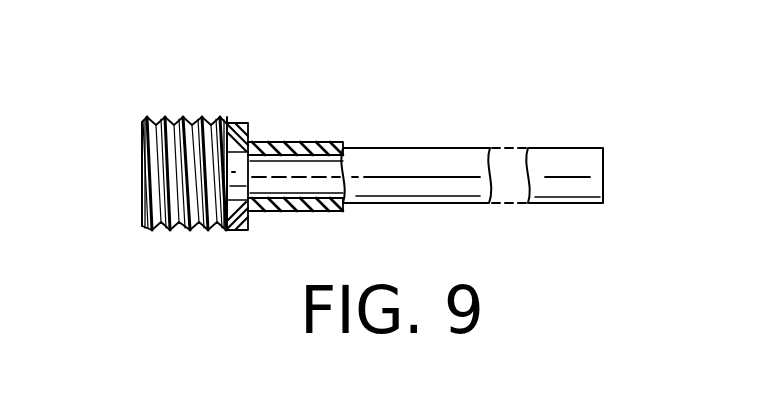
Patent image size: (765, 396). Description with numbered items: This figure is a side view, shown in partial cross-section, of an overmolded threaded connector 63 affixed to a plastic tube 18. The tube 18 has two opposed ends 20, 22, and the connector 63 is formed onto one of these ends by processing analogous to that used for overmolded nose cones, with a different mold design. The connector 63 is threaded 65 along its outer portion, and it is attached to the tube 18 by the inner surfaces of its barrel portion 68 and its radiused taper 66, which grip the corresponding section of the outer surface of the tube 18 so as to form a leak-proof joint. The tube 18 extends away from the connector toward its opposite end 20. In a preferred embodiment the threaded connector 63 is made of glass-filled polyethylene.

The tube 18 is at (410, 148).
The end of tube 20 is at (604, 188).
The end of tube 22 is at (234, 191).
The overmolded threaded connector 63 is at (178, 120).
The threads 65 is at (146, 158).
The radiused taper 66 is at (305, 146).
The barrel portion 68 is at (282, 143).